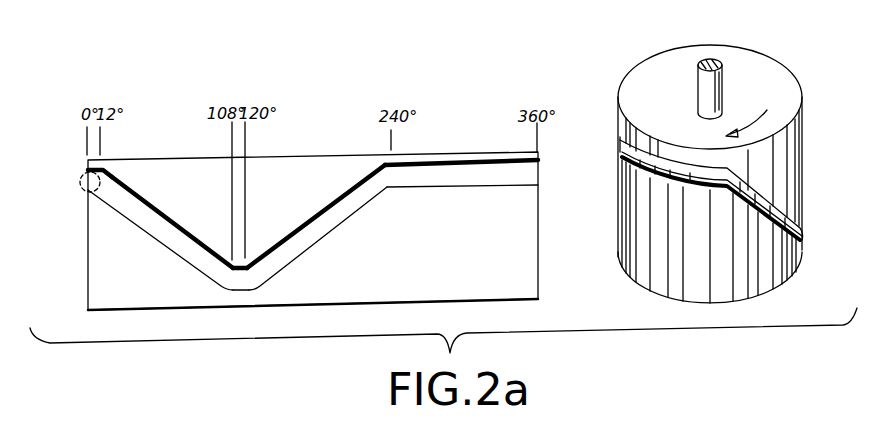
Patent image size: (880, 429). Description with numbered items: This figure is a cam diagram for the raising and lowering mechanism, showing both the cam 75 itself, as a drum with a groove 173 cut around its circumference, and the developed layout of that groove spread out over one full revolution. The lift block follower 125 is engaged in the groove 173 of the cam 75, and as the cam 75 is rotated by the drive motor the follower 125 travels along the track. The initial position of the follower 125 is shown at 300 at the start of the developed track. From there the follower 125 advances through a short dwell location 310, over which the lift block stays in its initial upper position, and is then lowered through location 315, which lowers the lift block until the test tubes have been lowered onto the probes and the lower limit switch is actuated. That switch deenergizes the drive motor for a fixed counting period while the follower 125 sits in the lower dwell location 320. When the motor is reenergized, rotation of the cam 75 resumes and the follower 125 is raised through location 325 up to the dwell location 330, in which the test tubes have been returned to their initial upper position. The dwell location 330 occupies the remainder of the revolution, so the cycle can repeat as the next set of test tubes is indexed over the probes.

The initial position 300 is at (85, 158).
The dwell location 310 is at (102, 140).
The lowering location 315 is at (102, 174).
The dwell location 320 is at (247, 258).
The raising location 325 is at (256, 260).
The dwell location 330 is at (393, 147).
The lift block follower 125 is at (79, 188).
The cam 75 is at (805, 170).
The groove 173 is at (803, 195).